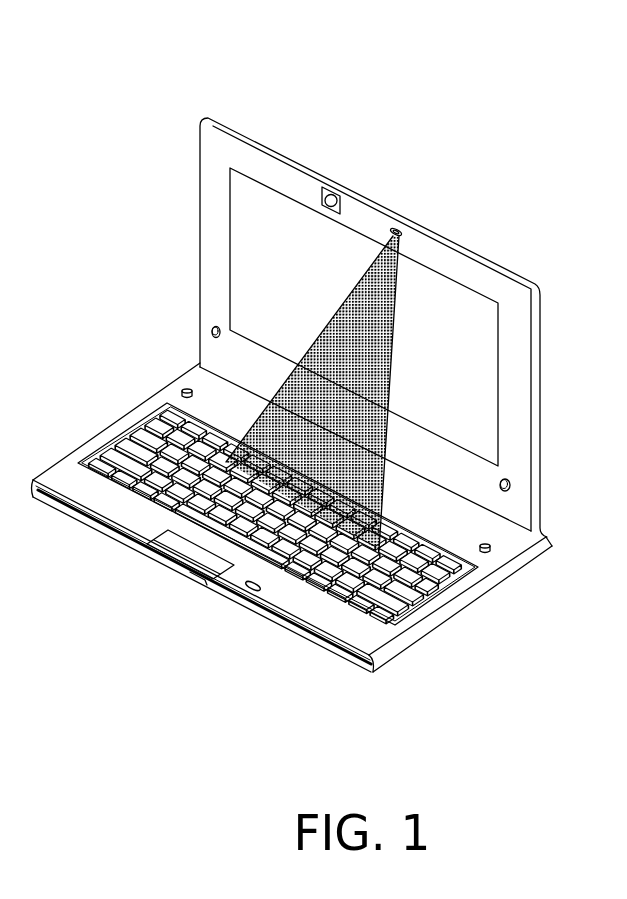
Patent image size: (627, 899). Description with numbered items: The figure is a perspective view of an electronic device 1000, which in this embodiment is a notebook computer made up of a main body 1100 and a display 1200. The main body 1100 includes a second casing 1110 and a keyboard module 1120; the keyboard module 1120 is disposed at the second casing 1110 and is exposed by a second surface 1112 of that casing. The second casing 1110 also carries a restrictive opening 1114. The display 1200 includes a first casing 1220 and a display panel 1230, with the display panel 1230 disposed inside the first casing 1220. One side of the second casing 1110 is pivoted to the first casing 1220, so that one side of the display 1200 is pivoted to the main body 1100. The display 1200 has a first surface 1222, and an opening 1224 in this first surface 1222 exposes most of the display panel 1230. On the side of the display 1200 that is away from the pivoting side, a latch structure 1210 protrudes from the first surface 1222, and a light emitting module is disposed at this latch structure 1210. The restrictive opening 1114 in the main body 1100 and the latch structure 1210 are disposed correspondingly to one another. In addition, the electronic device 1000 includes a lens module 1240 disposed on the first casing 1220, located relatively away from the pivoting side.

The electronic device 1000 is at (314, 410).
The main body 1100 is at (292, 586).
The second casing 1110 is at (264, 709).
The second surface 1112 is at (287, 597).
The restrictive opening 1114 is at (243, 583).
The keyboard module 1120 is at (362, 605).
The display 1200 is at (398, 280).
The latch structure 1210 is at (331, 313).
The first casing 1220 is at (395, 327).
The first surface 1222 is at (477, 285).
The opening 1224 is at (494, 378).
The display panel 1230 is at (412, 274).
The lens module 1240 is at (324, 186).